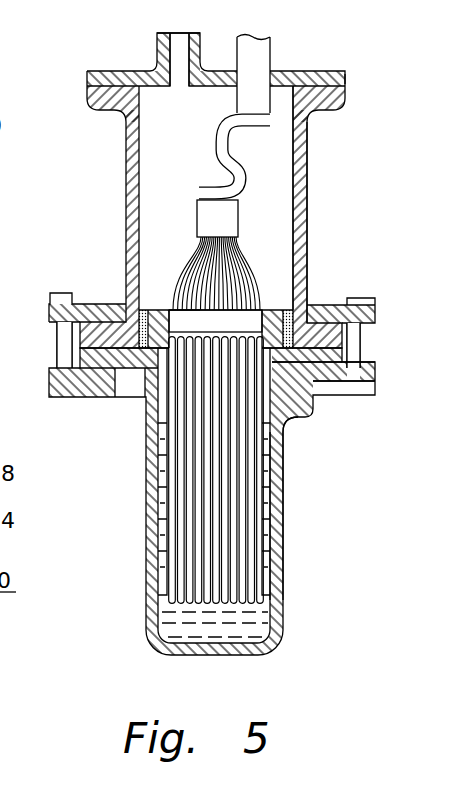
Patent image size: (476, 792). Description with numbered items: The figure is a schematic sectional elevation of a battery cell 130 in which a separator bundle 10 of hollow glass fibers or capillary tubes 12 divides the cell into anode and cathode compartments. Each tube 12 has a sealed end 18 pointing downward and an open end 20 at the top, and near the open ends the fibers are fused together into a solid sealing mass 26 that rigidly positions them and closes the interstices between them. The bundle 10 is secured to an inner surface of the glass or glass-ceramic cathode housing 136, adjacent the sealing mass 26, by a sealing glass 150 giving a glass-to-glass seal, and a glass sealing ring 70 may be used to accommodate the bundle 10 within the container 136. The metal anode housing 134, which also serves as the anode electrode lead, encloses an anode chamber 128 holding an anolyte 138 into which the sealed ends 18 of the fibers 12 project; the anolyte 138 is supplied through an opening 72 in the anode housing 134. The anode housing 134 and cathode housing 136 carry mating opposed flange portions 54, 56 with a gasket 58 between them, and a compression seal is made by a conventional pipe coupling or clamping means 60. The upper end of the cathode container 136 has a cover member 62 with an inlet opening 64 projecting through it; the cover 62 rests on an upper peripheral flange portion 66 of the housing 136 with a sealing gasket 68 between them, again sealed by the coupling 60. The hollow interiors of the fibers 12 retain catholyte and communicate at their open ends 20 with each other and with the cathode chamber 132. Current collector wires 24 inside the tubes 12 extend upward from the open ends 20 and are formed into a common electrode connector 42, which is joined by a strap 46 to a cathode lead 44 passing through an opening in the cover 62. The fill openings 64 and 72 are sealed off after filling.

The separator bundle 10 is at (278, 487).
The hollow fibers or capillary tubes 12 is at (192, 527).
The closed or sealed off end 18 is at (250, 616).
The open end 20 is at (246, 310).
The current collector 24 is at (207, 255).
The solid sealing mass 26 is at (176, 311).
The common electrode connector 42 is at (206, 216).
The cathode lead 44 is at (255, 47).
The strap 46 is at (220, 136).
The flange portion 54 is at (334, 356).
The flange portion 56 is at (343, 342).
The gasket 58 is at (312, 353).
The pipe coupling or clamping means 60 is at (50, 310).
The cover member 62 is at (306, 72).
The inlet opening 64 is at (178, 38).
The upper peripheral flange portion 66 is at (325, 105).
The sealing gasket 68 is at (344, 88).
The glass sealing ring 70 is at (150, 312).
The opening 72 is at (313, 419).
The anode chamber 128 is at (284, 555).
The battery cell 130 is at (314, 173).
The cathode chamber 132 is at (282, 231).
The anode housing or container 134 is at (278, 517).
The cathode housing or container 136 is at (308, 205).
The anolyte 138 is at (166, 470).
The sealing glass 150 is at (305, 311).